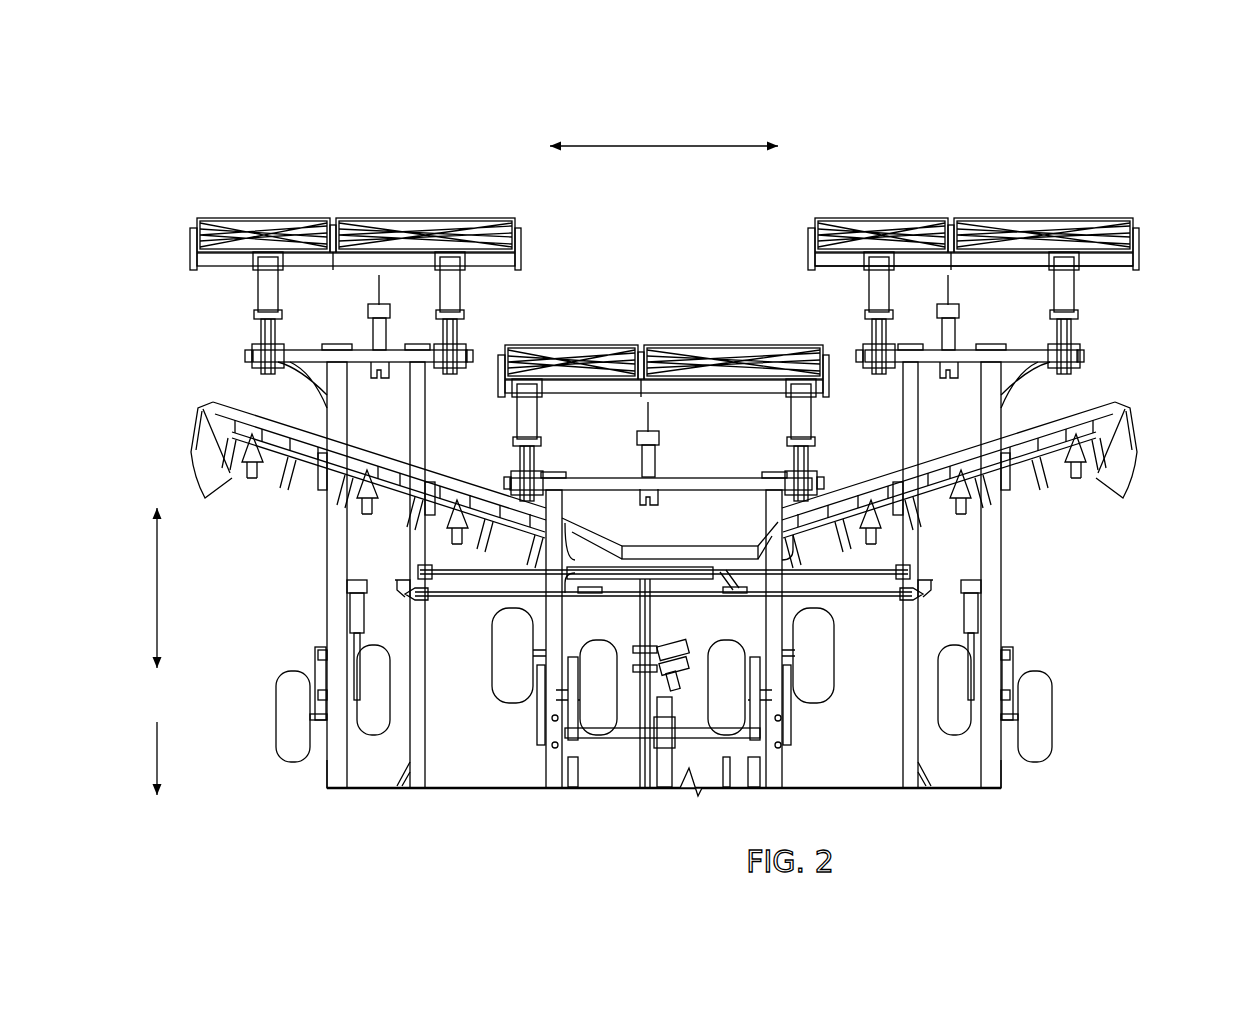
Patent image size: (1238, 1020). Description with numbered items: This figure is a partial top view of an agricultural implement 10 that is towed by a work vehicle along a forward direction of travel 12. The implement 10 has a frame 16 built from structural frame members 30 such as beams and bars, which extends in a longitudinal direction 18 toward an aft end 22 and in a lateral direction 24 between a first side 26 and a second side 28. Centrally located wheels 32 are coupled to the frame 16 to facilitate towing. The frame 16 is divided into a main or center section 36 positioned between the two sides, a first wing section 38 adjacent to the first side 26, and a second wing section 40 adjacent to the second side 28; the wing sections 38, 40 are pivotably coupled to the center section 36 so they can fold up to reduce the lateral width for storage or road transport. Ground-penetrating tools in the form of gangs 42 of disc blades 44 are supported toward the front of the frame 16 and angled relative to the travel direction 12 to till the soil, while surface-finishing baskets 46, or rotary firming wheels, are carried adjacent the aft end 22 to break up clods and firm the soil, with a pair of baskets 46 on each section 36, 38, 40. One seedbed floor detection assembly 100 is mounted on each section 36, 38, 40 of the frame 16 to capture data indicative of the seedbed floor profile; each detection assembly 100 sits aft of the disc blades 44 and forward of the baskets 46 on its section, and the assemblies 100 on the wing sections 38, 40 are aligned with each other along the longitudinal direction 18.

The agricultural implement 10 is at (297, 122).
The forward direction of travel 12 is at (157, 748).
The frame 16 is at (494, 773).
The longitudinal direction 18 is at (157, 605).
The aft end 22 is at (1122, 105).
The lateral direction 24 is at (690, 150).
The first side 26 is at (1078, 766).
The second side 28 is at (252, 780).
The structural frame members 30 is at (297, 366).
The centrally located wheels 32 is at (272, 668).
The main or center section 36 is at (628, 823).
The first wing section 38 is at (972, 810).
The second wing section 40 is at (330, 828).
The gangs of disc blades 42 is at (166, 430).
The disc blades 44 is at (660, 459).
The baskets or rotary firming wheels 46 is at (248, 216).
The seedbed floor detection assembly 100 is at (368, 312).